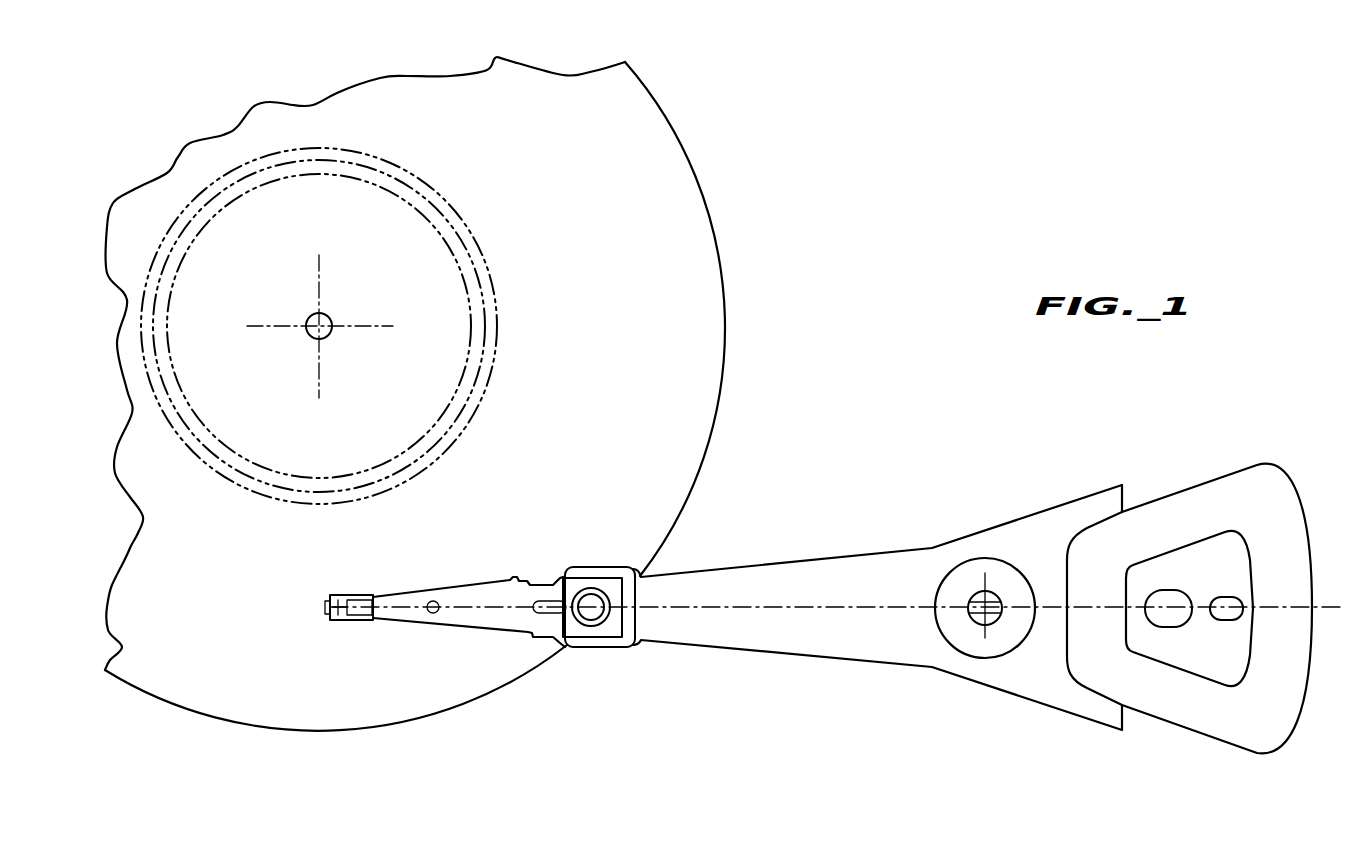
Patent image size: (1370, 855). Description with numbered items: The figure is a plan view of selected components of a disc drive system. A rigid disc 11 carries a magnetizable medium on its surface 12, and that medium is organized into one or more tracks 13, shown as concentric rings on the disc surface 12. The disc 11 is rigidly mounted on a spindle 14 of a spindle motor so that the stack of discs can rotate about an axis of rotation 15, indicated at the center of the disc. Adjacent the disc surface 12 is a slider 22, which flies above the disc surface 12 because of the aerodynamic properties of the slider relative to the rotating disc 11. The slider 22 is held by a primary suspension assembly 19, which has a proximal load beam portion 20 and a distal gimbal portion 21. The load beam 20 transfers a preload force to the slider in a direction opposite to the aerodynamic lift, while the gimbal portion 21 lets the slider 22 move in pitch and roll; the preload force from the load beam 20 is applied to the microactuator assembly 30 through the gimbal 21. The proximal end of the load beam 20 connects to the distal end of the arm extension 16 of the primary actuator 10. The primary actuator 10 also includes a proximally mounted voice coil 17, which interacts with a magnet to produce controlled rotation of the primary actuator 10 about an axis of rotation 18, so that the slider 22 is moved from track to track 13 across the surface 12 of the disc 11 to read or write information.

The primary actuator 10 is at (839, 526).
The rigid disc 11 is at (770, 141).
The disc surface 12 is at (704, 337).
The tracks 13 is at (307, 502).
The spindle 14 is at (331, 335).
The axis of rotation 15 is at (308, 334).
The arm extension 16 is at (750, 653).
The voice coil 17 is at (1211, 740).
The axis of rotation 18 is at (983, 635).
The primary suspension assembly 19 is at (412, 650).
The load beam portion 20 is at (465, 597).
The gimbal portion 21 is at (340, 622).
The slider 22 is at (322, 613).
The microactuator assembly 30 is at (316, 607).